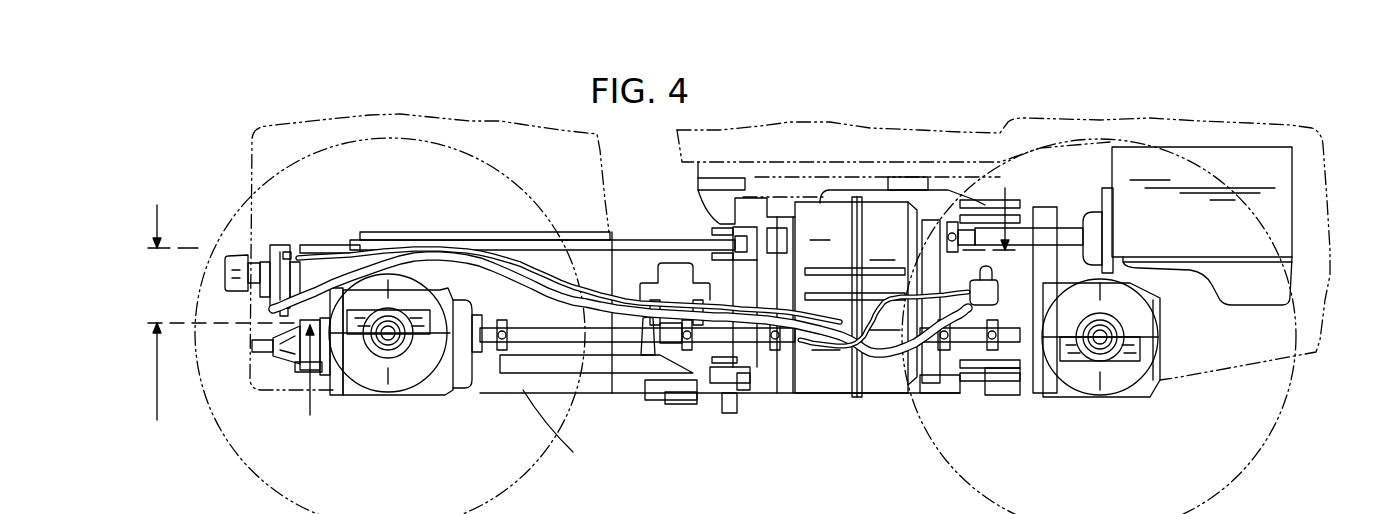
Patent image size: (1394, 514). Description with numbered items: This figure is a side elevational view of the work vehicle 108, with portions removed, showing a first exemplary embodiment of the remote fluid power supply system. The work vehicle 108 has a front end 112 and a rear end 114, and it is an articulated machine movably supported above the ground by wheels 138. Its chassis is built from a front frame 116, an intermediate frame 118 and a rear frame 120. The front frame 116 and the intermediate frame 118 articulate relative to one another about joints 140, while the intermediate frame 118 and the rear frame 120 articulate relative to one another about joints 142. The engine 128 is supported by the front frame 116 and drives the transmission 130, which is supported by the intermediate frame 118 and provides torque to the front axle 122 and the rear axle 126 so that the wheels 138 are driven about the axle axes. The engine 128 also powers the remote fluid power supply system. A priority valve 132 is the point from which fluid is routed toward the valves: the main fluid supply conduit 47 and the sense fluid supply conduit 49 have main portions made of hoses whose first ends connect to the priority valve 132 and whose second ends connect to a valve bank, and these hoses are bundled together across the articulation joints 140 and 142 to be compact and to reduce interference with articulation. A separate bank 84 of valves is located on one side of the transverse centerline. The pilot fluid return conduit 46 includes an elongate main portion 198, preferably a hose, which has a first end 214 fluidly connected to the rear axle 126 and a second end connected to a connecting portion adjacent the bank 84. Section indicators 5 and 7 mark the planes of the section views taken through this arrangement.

The section line 5- 5 is at (582, 232).
The section line 7- 7 is at (233, 382).
The pilot fluid return conduit 46 is at (452, 259).
The main fluid supply conduit 47 is at (881, 357).
The sense fluid supply conduit 49 is at (872, 362).
The bank 84 is at (267, 257).
The work vehicle 108 is at (441, 117).
The front end 112 is at (1334, 163).
The rear end 114 is at (163, 104).
The front frame 116 is at (1283, 404).
The intermediate frame 118 is at (830, 397).
The rear frame 120 is at (573, 452).
The front axle 122 is at (1101, 345).
The rear axle 126 is at (392, 338).
The engine 128 is at (1153, 158).
The transmission 130 is at (890, 207).
The priority valve 132 is at (986, 308).
The wheels 138 is at (560, 490).
The joints 140 is at (1004, 390).
The joints 142 is at (740, 405).
The main portion 198 is at (433, 258).
The first end 214 is at (475, 387).